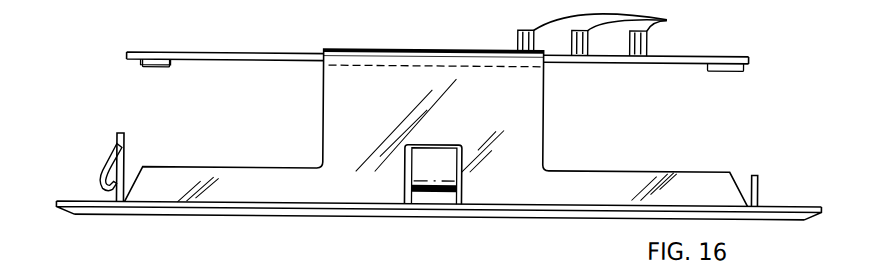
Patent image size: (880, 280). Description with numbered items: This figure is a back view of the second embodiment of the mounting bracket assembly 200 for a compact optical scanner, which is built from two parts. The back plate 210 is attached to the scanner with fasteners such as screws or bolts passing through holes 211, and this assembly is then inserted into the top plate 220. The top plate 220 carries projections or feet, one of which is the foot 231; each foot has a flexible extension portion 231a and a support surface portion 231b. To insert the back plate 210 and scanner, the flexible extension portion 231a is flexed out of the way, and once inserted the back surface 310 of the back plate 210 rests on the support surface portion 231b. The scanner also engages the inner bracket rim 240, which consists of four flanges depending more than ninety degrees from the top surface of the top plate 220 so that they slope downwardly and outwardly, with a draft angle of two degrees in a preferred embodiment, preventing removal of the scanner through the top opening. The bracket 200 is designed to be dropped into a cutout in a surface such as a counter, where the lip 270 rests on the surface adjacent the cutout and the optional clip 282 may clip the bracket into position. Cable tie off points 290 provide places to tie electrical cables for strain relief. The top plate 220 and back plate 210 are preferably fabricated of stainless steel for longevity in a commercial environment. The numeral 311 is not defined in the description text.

The mounting bracket assembly 200 is at (67, 204).
The back plate 210 is at (233, 54).
The holes 211 is at (712, 69).
The top plate 220 is at (210, 219).
The foot 231 is at (323, 88).
The flexible extension portion 231a is at (323, 133).
The support surface portion 231b is at (390, 50).
The inner bracket rim 240 is at (125, 154).
The lip 270 is at (85, 204).
The clip 282 is at (443, 193).
The cable tie off points 290 is at (666, 19).
The back surface 310 is at (163, 54).
The tab protrusion 311 is at (157, 69).